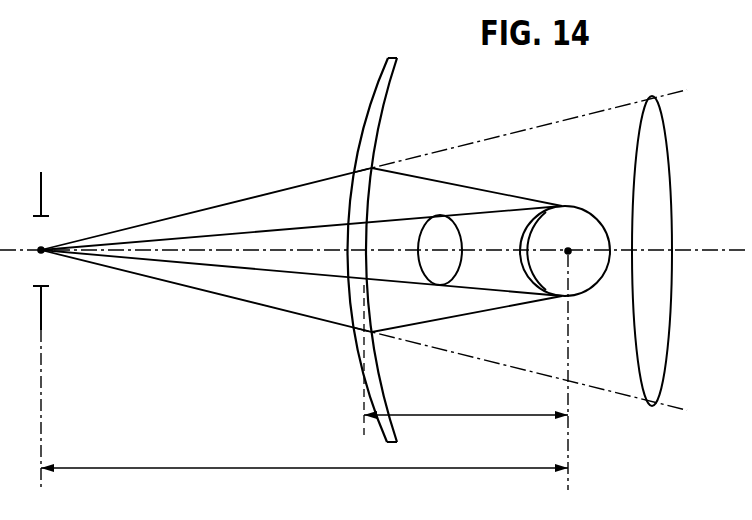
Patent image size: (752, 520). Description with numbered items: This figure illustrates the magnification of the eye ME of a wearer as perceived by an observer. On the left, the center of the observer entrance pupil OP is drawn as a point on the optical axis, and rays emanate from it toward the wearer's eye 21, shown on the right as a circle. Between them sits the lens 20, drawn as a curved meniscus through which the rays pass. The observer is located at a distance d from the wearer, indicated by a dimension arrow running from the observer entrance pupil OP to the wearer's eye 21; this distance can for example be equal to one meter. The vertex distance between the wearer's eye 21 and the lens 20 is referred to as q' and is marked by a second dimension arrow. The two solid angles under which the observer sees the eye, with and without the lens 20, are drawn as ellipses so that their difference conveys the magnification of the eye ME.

The lens 20 is at (375, 93).
The eye of the wearer 21 is at (580, 204).
The center of the observer entrance pupil OP is at (42, 247).
The magnification of the eye ME is at (572, 117).
The vertex distance q' is at (466, 402).
The distance of the observer d is at (304, 456).